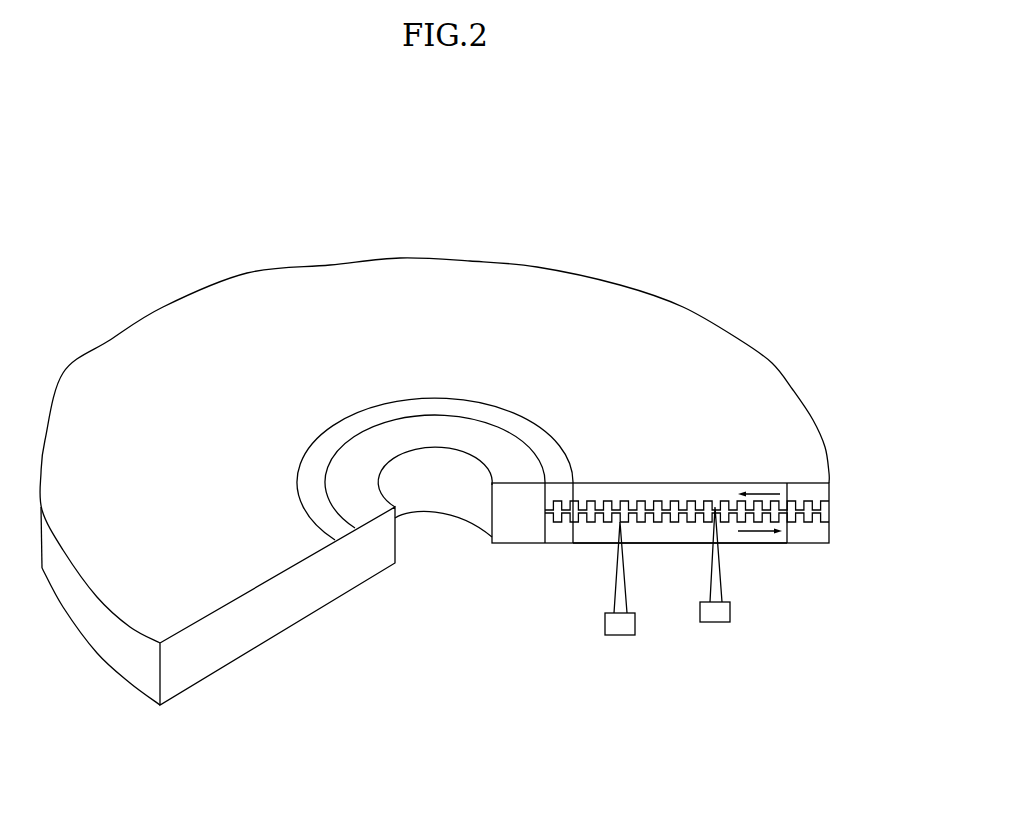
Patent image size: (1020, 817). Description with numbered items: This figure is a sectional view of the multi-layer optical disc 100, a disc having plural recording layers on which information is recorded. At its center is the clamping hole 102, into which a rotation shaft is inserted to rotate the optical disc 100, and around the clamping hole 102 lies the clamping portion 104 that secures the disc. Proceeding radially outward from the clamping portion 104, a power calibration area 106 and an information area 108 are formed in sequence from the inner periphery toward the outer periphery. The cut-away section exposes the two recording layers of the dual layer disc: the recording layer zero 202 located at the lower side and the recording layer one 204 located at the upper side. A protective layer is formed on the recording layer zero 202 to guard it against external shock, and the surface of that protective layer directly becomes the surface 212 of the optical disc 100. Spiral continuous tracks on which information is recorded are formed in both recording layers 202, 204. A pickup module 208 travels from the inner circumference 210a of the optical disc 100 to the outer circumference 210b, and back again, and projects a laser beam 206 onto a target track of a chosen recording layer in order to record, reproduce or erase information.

The multi-layer optical disc 100 is at (543, 250).
The clamping hole 102 is at (455, 468).
The clamping portion 104 is at (498, 448).
The power calibration area 106 is at (545, 448).
The information area 108 is at (670, 398).
The recording layer 0 202 is at (829, 523).
The recording layer 1 204 is at (829, 503).
The laser beam 206 is at (627, 580).
The pickup module 208 is at (620, 635).
The inner circumference 210a is at (544, 558).
The outer circumference 210b is at (829, 560).
The surface of the optical disc 212 is at (595, 545).